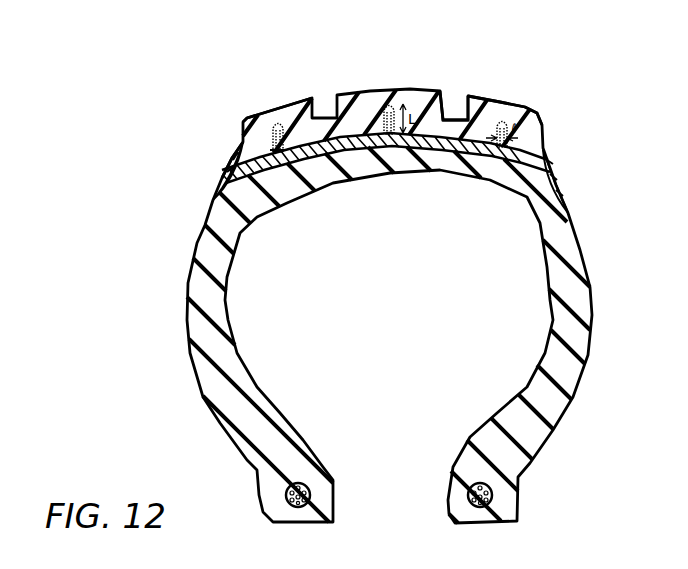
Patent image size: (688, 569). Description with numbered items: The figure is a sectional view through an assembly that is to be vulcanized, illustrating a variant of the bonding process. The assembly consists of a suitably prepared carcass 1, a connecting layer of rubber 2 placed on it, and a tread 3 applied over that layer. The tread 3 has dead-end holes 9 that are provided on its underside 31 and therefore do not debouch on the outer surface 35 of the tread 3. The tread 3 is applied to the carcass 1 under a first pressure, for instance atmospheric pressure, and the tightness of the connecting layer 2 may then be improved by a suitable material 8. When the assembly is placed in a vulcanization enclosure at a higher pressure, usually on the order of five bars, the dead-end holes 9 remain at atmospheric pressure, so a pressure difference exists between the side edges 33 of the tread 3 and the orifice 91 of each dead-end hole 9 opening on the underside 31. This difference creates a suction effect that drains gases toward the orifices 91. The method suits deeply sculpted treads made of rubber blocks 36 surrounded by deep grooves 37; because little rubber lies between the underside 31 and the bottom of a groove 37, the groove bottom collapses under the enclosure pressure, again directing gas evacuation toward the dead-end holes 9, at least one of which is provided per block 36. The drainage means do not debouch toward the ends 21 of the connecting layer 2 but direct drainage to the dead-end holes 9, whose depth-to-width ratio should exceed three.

The carcass 1 is at (576, 260).
The connecting layer of rubber 2 is at (395, 142).
The tread 3 is at (534, 128).
The suitable material 8 is at (222, 172).
The dead-end holes 9 is at (281, 120).
The ends of the connecting layer of rubber 21 is at (530, 186).
The underside of the tread 31 is at (347, 158).
The side edges of the tread 33 is at (241, 142).
The surface of the tread 35 is at (500, 106).
The rubber blocks 36 is at (261, 118).
The grooves 37 is at (452, 120).
The orifice of the dead-end hole 91 is at (277, 152).